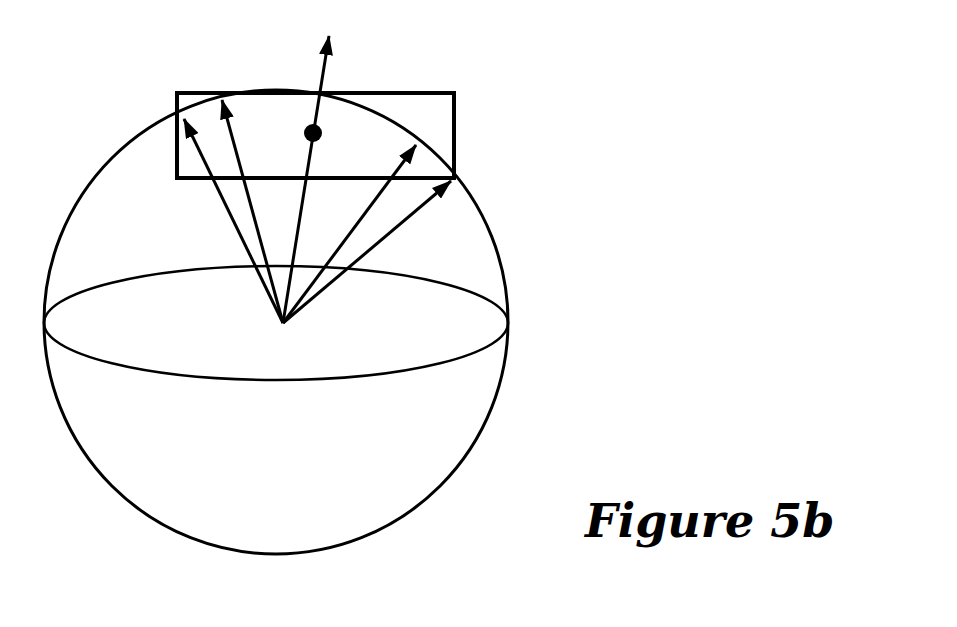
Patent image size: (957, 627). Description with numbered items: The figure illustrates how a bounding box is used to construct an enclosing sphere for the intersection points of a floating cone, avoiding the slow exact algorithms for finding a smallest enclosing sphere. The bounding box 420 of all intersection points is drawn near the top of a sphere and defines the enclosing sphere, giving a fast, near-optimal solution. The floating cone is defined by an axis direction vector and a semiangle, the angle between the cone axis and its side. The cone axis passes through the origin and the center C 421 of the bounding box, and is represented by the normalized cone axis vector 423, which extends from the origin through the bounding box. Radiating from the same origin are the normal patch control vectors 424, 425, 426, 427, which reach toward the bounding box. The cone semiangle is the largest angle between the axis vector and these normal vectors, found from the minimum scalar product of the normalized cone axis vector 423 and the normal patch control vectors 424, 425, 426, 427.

The bounding box 420 is at (437, 92).
The center C 421 is at (323, 135).
The normalized cone axis vector 423 is at (303, 236).
The normal patch control vector 424 is at (310, 300).
The normal patch control vector 425 is at (346, 243).
The normal patch control vector 426 is at (248, 213).
The normal patch control vector 427 is at (260, 283).